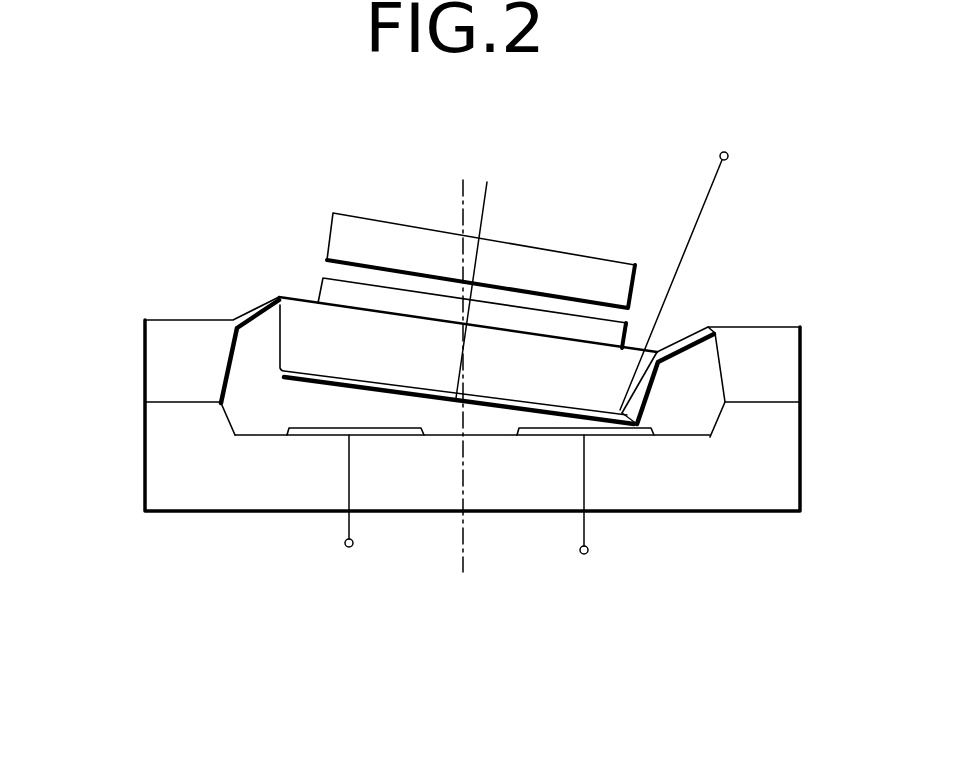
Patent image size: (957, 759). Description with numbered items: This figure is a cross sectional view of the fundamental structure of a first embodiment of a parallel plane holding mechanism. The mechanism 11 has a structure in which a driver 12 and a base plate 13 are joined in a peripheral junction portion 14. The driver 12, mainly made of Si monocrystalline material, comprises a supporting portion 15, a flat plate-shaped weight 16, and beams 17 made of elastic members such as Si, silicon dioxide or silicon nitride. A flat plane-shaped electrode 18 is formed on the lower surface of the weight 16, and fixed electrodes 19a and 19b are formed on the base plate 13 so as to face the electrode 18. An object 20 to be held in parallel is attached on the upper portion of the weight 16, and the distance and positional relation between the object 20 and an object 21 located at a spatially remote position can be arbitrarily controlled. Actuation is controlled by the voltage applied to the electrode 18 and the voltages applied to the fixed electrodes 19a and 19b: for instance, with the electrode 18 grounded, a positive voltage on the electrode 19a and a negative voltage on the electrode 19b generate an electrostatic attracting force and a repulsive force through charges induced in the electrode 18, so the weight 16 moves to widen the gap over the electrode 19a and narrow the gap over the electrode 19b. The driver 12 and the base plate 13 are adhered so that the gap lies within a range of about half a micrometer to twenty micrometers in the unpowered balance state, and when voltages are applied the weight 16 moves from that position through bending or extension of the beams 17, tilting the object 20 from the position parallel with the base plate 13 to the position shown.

The mechanism 11 is at (167, 480).
The driver 12 is at (785, 378).
The base plate 13 is at (785, 472).
The peripheral junction portion 14 is at (158, 400).
The supporting portion 15 is at (178, 342).
The flat plate-shaped weight 16 is at (617, 380).
The beams 17 is at (250, 312).
The electrode 18 is at (316, 366).
The electrode 19a is at (327, 437).
The electrode 19b is at (634, 437).
The object to be held in parallel 20 is at (641, 356).
The object 21 is at (545, 273).